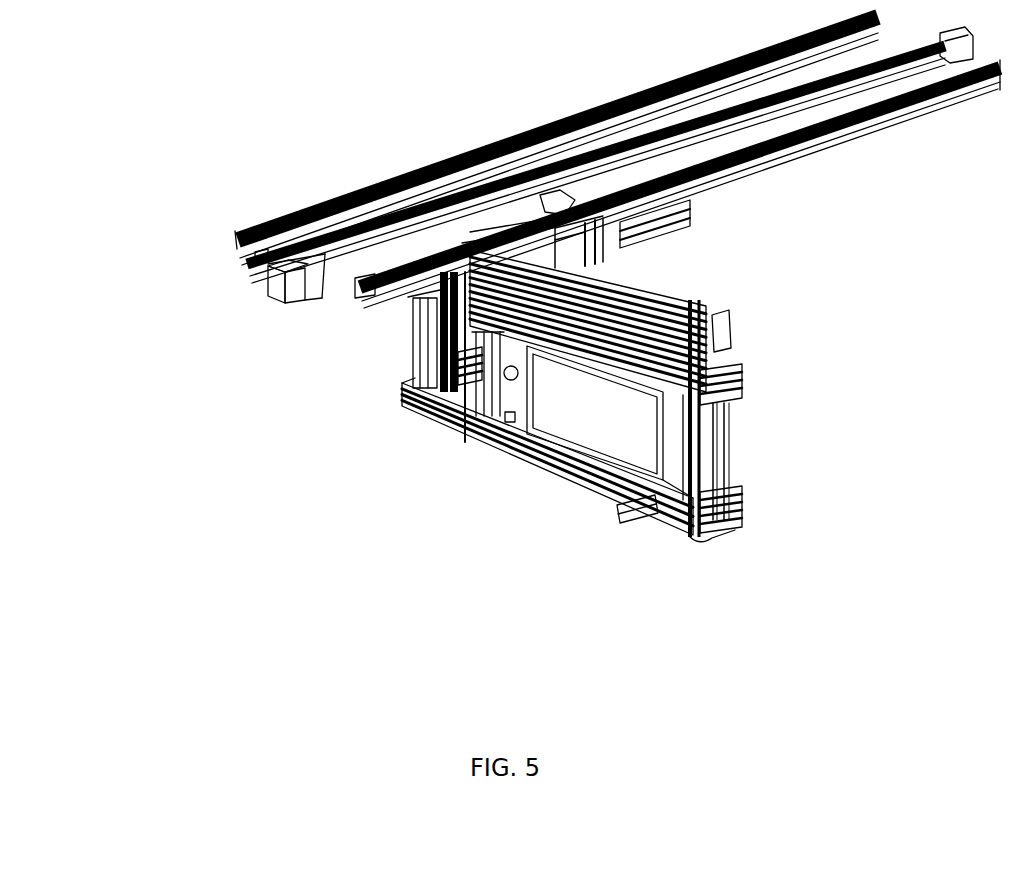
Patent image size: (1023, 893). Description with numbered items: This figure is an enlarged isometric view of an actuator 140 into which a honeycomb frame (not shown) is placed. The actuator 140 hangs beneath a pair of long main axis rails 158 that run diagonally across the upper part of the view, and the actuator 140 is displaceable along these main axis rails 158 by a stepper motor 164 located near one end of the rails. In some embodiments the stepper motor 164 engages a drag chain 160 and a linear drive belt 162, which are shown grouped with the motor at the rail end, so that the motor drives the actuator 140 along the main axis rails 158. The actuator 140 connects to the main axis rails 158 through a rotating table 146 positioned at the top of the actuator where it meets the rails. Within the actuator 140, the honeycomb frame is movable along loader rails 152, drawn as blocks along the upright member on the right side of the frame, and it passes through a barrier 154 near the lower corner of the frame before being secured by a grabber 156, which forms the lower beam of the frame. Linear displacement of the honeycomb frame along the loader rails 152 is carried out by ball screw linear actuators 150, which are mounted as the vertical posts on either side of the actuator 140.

The actuator 140 is at (528, 515).
The rotating table 146 is at (567, 193).
The ball screw linear actuators 150 is at (600, 338).
The loader rails 152 is at (743, 397).
The barrier 154 is at (657, 504).
The grabber 156 is at (447, 437).
The main axis rails 158 is at (258, 258).
The drag chain 160 is at (280, 272).
The linear drive belt 162 is at (296, 287).
The stepper motor 164 is at (305, 298).